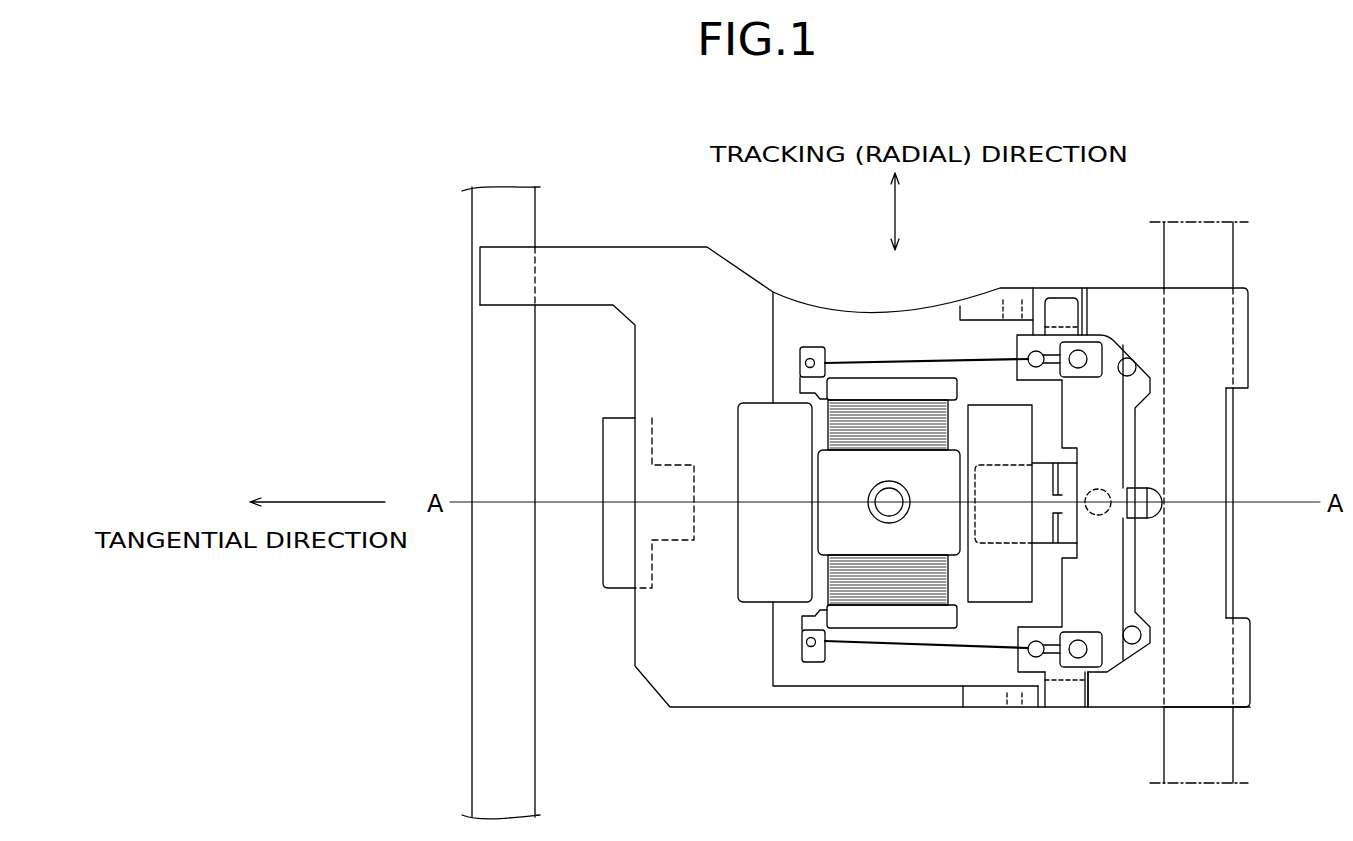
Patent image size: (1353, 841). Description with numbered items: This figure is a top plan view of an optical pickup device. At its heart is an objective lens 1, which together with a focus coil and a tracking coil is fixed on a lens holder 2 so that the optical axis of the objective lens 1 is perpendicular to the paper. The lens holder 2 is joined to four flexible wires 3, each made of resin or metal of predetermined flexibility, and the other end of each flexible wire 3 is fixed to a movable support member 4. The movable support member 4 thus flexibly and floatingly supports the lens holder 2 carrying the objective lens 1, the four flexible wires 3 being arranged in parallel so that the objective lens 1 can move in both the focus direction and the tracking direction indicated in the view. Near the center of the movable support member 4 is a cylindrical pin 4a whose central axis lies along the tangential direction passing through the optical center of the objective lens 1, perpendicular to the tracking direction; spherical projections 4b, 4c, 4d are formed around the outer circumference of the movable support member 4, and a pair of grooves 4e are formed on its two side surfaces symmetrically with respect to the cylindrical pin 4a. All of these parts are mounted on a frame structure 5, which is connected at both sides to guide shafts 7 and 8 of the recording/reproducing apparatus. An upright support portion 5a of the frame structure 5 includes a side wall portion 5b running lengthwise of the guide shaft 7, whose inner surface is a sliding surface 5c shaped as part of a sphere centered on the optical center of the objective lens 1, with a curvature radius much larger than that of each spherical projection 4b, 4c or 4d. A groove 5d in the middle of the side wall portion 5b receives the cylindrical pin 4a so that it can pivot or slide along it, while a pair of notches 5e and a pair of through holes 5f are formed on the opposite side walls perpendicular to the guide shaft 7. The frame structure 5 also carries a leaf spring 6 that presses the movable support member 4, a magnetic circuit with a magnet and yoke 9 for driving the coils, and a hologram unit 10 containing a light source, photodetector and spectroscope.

The objective lens 1 is at (880, 498).
The lens holder 2 is at (873, 385).
The flexible wires 3 is at (920, 360).
The movable support member 4 is at (1118, 478).
The cylindrical pin 4a is at (1122, 525).
The spherical projection 4b is at (1131, 358).
The spherical projection 4c is at (1138, 647).
The spherical projection 4d is at (1096, 488).
The grooves 4e is at (1065, 302).
The frame structure 5 is at (730, 270).
The support portion 5a is at (1133, 288).
The side wall portion 5b is at (1155, 545).
The sliding surface 5c is at (1110, 678).
The groove 5d is at (1158, 496).
The notches 5e is at (1048, 296).
The through holes 5f is at (1012, 302).
The leaf spring 6 is at (1050, 470).
The guide shaft 7 is at (1210, 243).
The guide shaft 8 is at (533, 208).
The magnet 9 is at (753, 597).
The hologram unit 10 is at (613, 596).